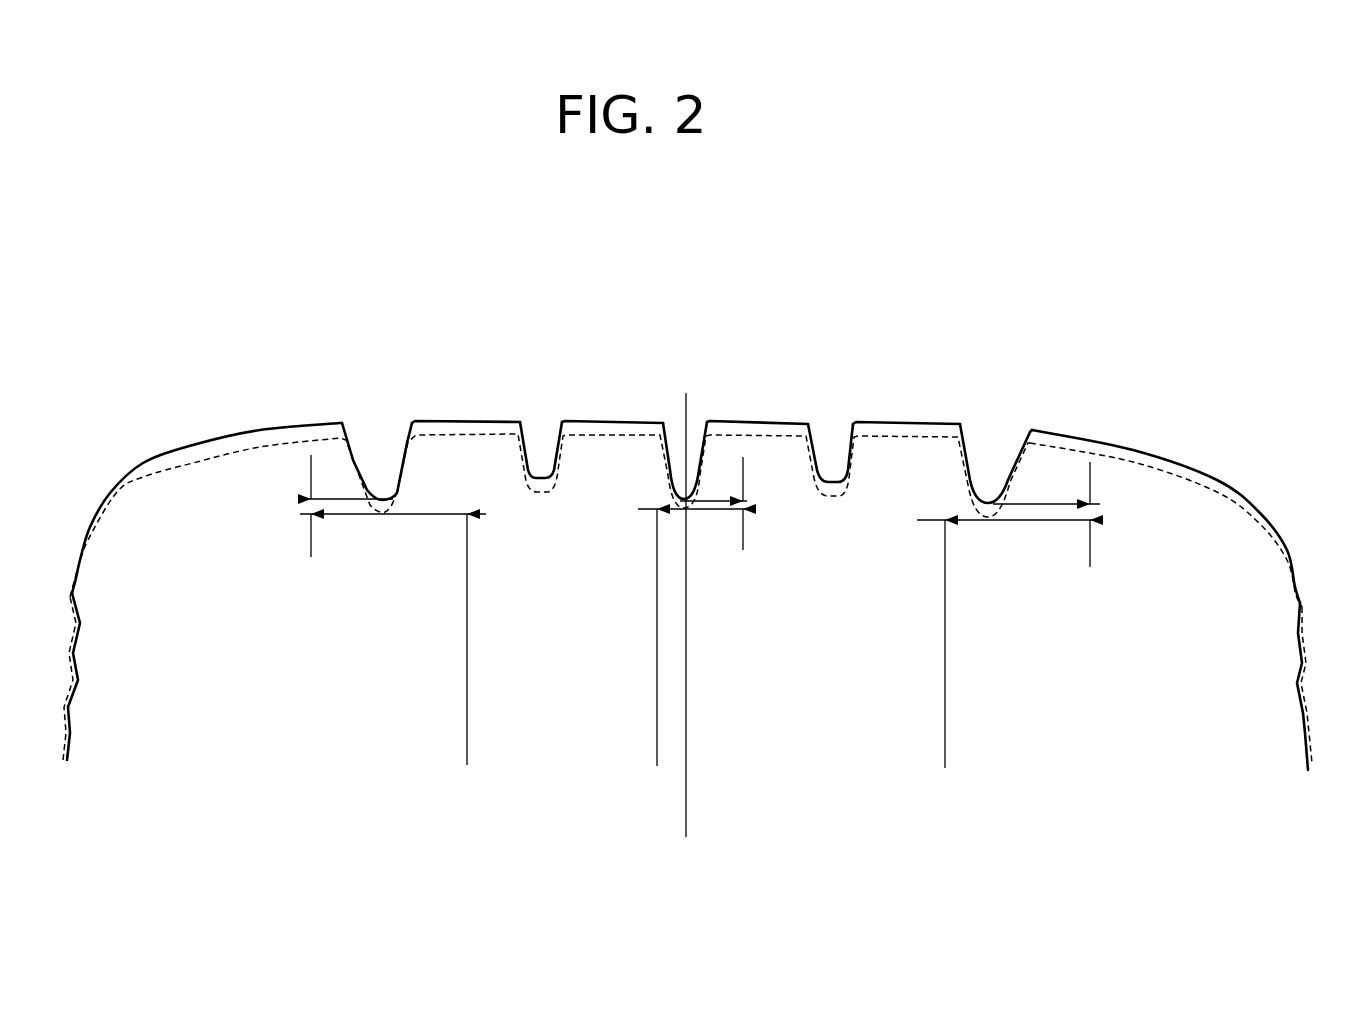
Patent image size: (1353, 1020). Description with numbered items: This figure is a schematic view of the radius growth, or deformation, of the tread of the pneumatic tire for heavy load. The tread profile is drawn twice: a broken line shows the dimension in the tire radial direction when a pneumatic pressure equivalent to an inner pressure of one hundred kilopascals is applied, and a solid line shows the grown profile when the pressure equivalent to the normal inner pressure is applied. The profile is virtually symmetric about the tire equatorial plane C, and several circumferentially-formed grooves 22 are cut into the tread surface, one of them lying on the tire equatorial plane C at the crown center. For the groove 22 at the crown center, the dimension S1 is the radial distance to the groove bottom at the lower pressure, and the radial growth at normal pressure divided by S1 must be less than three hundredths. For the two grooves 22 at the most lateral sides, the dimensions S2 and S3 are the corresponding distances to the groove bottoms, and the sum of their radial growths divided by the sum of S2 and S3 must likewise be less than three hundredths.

The circumferentially-formed groove 22 is at (380, 457).
The tire equatorial plane C is at (686, 601).
The dimension to groove bottom at crown center S1 is at (637, 637).
The dimension to groove bottom of lateral groove S2 is at (447, 639).
The dimension to groove bottom of lateral groove S3 is at (968, 644).